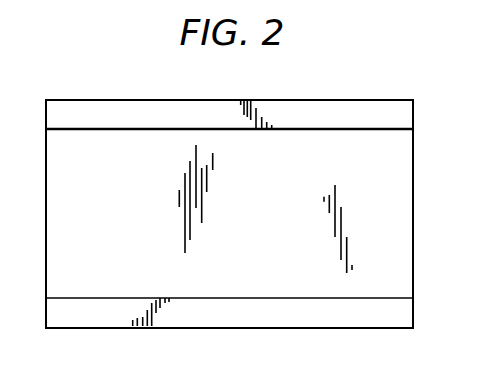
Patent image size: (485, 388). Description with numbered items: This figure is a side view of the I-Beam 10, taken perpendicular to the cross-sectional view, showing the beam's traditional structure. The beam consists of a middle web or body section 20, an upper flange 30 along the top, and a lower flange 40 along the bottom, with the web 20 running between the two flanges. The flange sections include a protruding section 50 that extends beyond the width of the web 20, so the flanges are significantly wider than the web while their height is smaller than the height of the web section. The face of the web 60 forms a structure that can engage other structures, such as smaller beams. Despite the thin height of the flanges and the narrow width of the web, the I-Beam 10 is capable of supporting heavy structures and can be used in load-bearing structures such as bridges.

The I-Beam 10 is at (355, 100).
The web section 20 is at (60, 212).
The upper flange 30 is at (204, 110).
The lower flange 40 is at (233, 315).
The protruding section 50 is at (145, 110).
The face of the web 60 is at (402, 215).